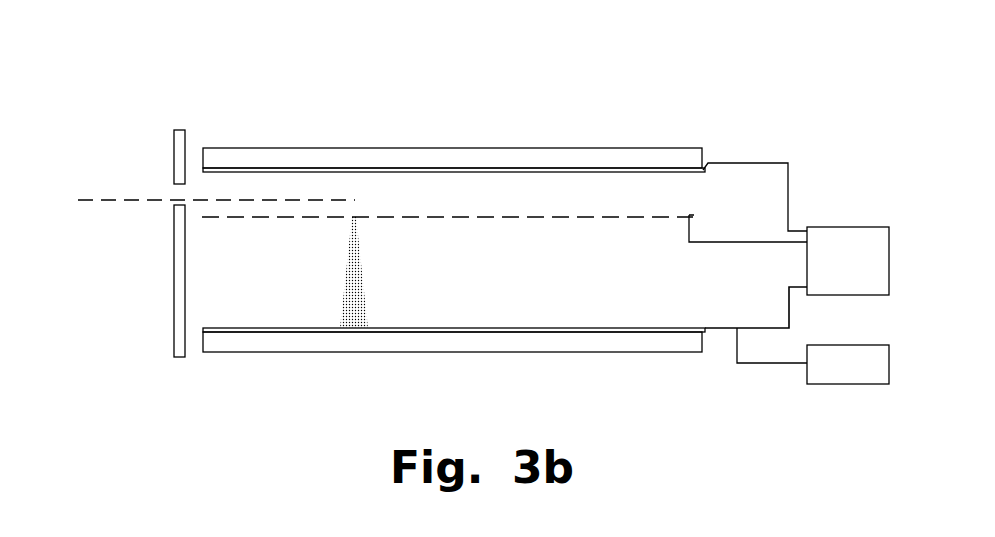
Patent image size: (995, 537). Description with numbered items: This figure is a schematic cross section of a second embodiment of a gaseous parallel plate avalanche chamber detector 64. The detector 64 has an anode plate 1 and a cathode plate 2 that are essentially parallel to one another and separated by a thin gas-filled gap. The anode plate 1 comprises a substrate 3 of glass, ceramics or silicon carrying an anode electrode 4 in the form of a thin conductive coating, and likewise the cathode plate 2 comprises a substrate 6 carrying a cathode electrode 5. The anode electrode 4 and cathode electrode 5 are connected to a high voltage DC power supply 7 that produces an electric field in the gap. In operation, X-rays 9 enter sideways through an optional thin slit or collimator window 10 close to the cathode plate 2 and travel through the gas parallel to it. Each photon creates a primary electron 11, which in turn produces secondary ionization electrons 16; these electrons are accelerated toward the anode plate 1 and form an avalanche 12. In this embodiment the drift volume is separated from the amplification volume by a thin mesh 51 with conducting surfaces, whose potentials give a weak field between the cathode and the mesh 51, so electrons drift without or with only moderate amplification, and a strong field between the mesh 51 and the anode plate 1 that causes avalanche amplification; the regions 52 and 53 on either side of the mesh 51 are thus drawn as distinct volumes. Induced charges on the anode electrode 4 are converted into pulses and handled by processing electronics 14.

The anode plate 1 is at (532, 352).
The cathode plate 2 is at (577, 146).
The substrate 3 is at (630, 343).
The anode electrode 4 is at (590, 327).
The cathode electrode 5 is at (715, 163).
The substrate 6 is at (655, 158).
The high voltage DC power supply 7 is at (789, 271).
The X-rays 9 is at (106, 201).
The slit or collimator window 10 is at (170, 190).
The primary electron 11 is at (352, 198).
The avalanche 12 is at (355, 275).
The processing electronics 14 is at (813, 356).
The secondary ionization electrons 16 is at (355, 200).
The mesh 51 is at (460, 216).
The upper discharge region 52 is at (545, 190).
The lower discharge region 53 is at (547, 262).
The detector 64 is at (472, 136).